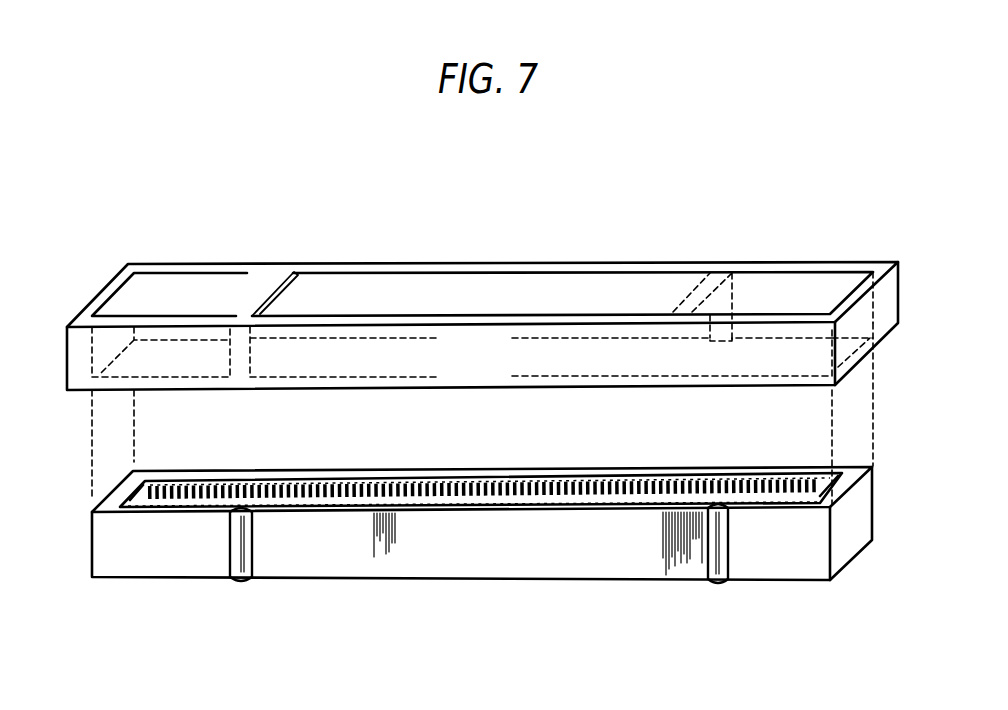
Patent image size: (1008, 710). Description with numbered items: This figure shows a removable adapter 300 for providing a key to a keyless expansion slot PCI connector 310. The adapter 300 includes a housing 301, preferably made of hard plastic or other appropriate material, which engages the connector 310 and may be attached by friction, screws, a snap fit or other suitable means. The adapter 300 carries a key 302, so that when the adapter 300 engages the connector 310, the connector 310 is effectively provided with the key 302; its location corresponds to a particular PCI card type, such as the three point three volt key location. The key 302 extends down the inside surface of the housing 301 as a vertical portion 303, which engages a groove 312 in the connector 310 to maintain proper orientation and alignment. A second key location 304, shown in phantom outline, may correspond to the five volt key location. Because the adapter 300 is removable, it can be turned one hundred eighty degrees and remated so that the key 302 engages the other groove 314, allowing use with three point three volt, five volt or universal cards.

The removable adapter 300 is at (848, 221).
The housing 301 is at (496, 368).
The key 302 is at (266, 292).
The vertical portion 303 is at (243, 359).
The key location 304 is at (703, 292).
The expansion slot PCI connector 310 is at (496, 560).
The groove 312 is at (243, 552).
The groove 314 is at (717, 550).